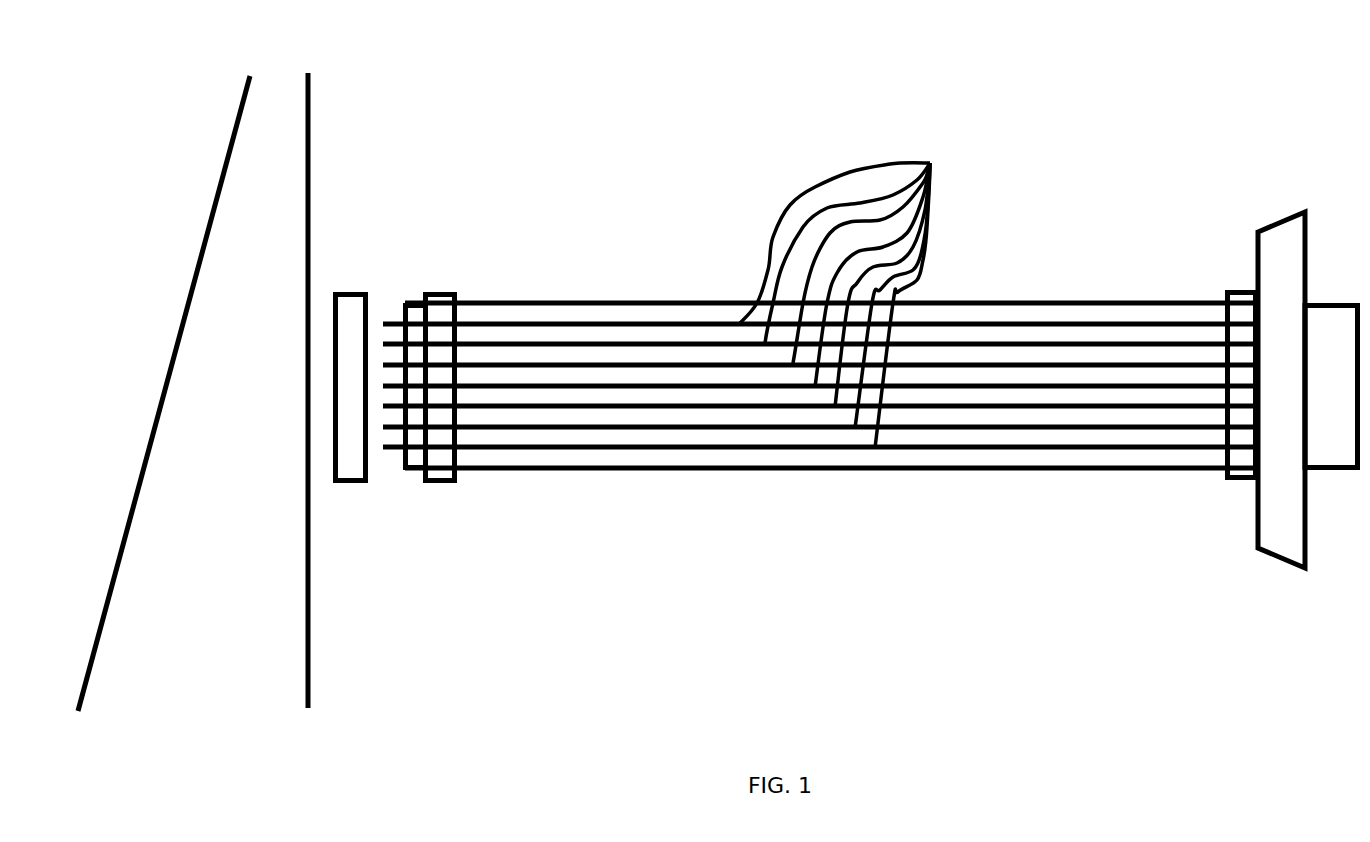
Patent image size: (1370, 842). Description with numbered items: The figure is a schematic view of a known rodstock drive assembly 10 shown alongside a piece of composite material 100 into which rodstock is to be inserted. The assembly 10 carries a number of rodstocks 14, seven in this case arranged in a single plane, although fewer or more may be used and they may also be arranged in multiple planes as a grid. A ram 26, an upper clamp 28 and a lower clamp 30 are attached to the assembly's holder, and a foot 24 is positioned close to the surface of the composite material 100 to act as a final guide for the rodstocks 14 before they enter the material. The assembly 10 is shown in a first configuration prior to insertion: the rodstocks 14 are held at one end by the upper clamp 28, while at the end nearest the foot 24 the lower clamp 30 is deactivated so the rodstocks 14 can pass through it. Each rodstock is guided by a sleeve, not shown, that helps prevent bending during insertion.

The rodstock drive assembly 10 is at (1025, 83).
The rodstocks 14 is at (820, 306).
The foot 24 is at (350, 290).
The ram 26 is at (1275, 557).
The upper clamp 28 is at (1242, 290).
The lower clamp 30 is at (430, 290).
The composite material 100 is at (193, 392).